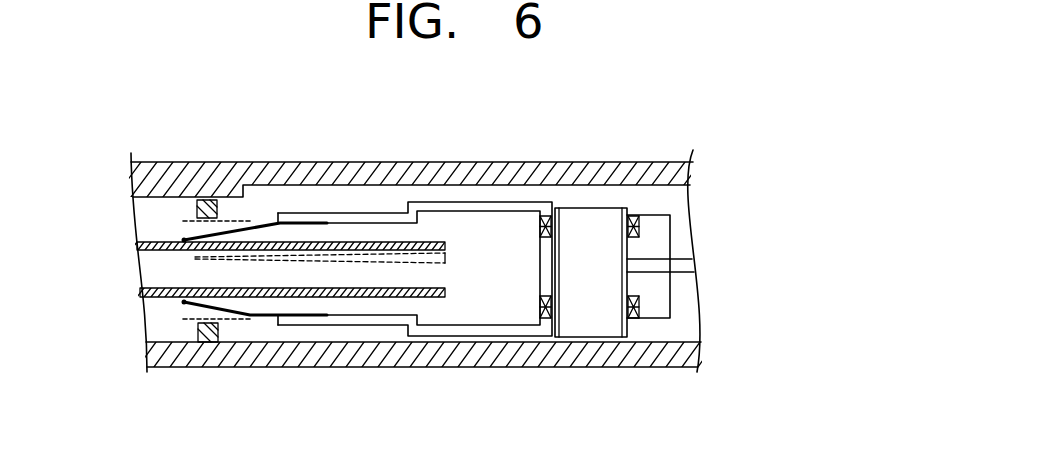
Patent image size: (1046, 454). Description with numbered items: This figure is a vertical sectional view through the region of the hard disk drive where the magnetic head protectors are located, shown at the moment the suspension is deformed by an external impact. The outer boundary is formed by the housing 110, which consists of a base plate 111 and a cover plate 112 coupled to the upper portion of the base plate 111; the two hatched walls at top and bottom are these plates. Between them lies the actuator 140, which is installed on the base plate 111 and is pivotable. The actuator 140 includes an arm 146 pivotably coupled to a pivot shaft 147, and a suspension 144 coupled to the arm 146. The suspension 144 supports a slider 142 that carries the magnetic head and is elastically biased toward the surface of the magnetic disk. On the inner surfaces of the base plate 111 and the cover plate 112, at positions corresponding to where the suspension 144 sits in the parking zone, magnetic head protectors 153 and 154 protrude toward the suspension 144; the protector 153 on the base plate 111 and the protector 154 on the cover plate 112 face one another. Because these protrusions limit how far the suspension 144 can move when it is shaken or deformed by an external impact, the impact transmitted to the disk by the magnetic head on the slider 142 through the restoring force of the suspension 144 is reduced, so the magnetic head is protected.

The housing 110 is at (498, 261).
The base plate 111 is at (701, 340).
The cover plate 112 is at (688, 181).
The actuator 140 is at (486, 221).
The slider 142 is at (178, 256).
The suspension 144 is at (231, 226).
The arm 146 is at (423, 201).
The pivot shaft 147 is at (592, 212).
The magnetic head protector 153 is at (200, 341).
The magnetic head protector 154 is at (200, 199).